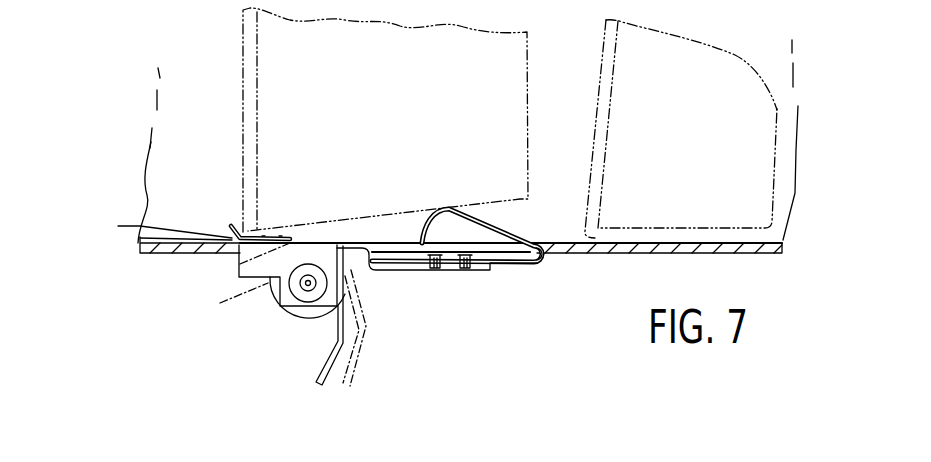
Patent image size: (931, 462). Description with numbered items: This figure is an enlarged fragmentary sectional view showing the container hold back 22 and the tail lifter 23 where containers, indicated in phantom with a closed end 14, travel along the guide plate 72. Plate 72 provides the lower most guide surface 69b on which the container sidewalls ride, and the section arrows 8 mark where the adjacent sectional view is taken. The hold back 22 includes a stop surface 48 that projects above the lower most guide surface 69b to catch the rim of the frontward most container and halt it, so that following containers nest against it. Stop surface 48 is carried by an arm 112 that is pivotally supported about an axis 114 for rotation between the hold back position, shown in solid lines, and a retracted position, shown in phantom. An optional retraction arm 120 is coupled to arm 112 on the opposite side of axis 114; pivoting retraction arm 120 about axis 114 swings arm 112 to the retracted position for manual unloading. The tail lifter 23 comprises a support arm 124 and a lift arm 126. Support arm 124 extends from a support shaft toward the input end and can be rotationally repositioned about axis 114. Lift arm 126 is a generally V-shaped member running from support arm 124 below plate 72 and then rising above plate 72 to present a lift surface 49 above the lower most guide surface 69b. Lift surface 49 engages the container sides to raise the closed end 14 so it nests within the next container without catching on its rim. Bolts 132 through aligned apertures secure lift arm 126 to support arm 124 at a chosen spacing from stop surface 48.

The closed end 14 is at (528, 72).
The lower most guide surface 69b is at (722, 241).
The section line 8- 8 is at (224, 212).
The guide plate 72 is at (165, 253).
The arm 112 is at (156, 227).
The stop surface 48 is at (231, 226).
The container hold back 22 is at (222, 272).
The axis 114 is at (306, 285).
The retraction arm 120 is at (316, 381).
The support arm 124 is at (412, 272).
The lift surface 49 is at (463, 211).
The bolts 132 is at (450, 284).
The tail lifter 23 is at (518, 276).
The lift arm 126 is at (546, 267).